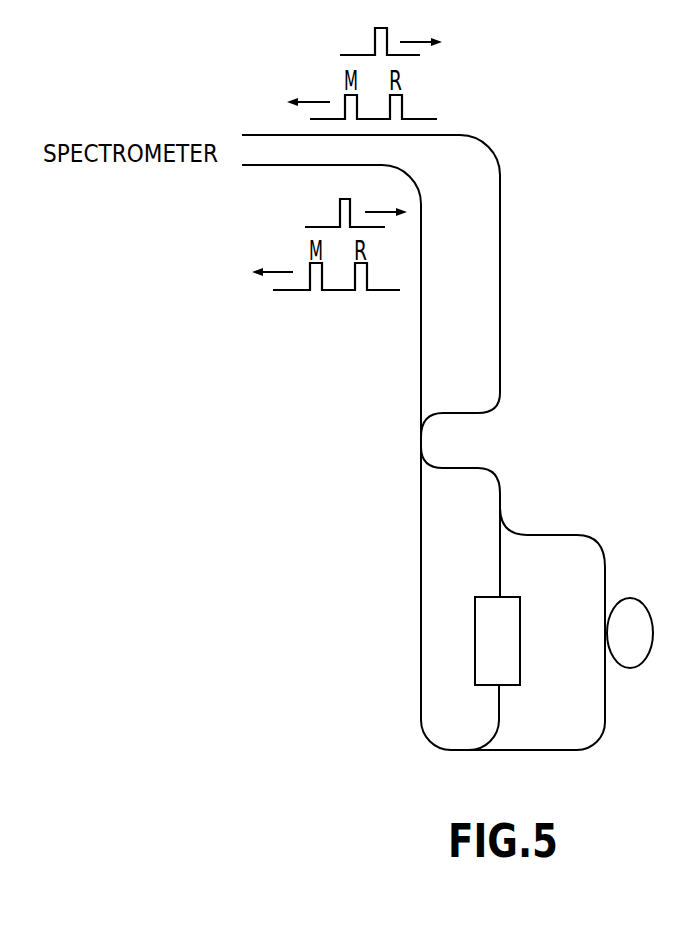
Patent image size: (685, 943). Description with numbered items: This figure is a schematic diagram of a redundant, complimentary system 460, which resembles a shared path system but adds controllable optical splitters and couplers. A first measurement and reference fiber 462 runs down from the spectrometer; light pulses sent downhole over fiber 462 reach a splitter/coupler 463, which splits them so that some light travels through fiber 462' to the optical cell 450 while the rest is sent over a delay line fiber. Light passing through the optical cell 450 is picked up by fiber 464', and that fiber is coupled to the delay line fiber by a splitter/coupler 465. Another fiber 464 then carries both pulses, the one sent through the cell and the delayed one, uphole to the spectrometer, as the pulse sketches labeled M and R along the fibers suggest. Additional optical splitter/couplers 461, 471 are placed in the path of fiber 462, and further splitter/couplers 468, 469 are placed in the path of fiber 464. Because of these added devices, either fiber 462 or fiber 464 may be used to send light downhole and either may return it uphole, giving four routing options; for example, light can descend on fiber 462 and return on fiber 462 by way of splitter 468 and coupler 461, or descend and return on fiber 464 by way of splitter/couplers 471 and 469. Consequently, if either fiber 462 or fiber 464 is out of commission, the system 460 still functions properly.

The complimentary system 460 is at (285, 415).
The first measurement and reference fiber 462 is at (402, 264).
The fiber 464 is at (331, 301).
The optical splitter/coupler 461 is at (499, 395).
The optical splitter/coupler 468 is at (421, 433).
The optical splitter/coupler 469 is at (421, 448).
The optical splitter/coupler 471 is at (500, 493).
The splitter/coupler 463 is at (501, 500).
The fiber 462' is at (428, 545).
The optical cell 450 is at (475, 623).
The fiber 464' is at (508, 736).
The splitter/coupler 465 is at (458, 750).